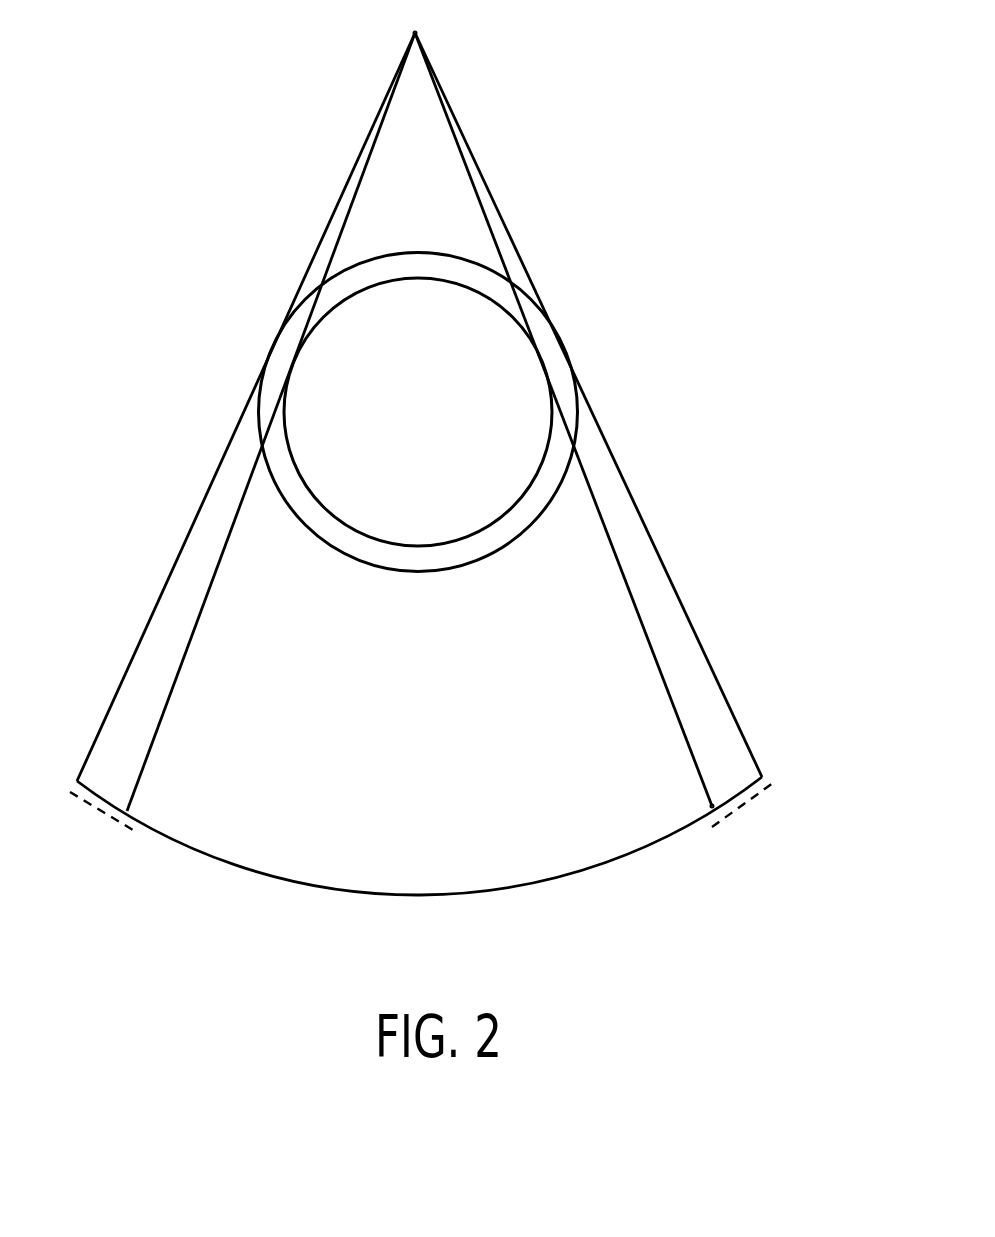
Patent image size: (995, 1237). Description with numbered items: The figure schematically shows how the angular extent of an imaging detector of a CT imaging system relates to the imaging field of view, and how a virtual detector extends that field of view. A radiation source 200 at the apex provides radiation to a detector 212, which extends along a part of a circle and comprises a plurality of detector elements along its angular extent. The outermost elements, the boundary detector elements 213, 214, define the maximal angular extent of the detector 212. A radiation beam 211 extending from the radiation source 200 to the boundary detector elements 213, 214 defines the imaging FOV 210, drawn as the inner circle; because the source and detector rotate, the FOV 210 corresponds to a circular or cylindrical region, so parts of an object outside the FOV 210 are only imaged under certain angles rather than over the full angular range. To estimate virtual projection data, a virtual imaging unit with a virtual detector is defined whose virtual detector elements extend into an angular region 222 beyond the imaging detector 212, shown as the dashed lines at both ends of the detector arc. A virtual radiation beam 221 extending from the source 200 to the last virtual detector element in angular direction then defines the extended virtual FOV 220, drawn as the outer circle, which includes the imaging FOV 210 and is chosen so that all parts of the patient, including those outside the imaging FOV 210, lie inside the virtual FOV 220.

The radiation source 200 is at (418, 33).
The imaging FOV 210 is at (480, 292).
The radiation beam 211 is at (647, 628).
The detector 212 is at (533, 886).
The boundary detector element 213 is at (712, 806).
The boundary detector element 214 is at (128, 811).
The virtual FOV 220 is at (567, 357).
The virtual radiation beam 221 is at (647, 526).
The angular region 222 is at (743, 805).